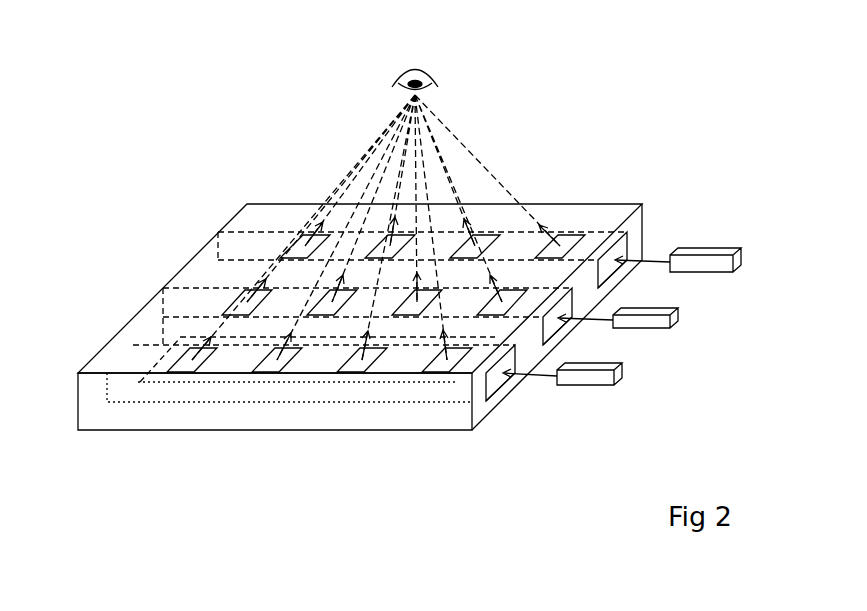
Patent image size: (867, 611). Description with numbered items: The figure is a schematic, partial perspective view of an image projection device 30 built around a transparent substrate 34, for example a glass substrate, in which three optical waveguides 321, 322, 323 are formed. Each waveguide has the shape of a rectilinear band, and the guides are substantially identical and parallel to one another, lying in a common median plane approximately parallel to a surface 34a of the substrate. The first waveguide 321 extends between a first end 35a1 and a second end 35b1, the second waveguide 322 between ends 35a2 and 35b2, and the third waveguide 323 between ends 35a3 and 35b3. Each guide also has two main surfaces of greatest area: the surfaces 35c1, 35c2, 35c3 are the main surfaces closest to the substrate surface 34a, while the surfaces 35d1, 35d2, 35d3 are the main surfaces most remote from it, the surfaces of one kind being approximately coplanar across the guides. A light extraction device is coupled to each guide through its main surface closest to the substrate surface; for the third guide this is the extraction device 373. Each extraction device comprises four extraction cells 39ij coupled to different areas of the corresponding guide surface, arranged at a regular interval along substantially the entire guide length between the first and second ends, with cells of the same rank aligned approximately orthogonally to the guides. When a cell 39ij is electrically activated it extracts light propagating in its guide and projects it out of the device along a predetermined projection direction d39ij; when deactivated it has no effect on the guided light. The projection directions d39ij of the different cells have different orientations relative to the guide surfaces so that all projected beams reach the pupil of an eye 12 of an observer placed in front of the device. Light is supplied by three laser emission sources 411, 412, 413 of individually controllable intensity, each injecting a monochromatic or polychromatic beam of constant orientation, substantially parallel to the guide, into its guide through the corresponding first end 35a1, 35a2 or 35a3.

The eye 12 is at (437, 85).
The image projection device 30 is at (128, 190).
The first optical waveguide 321 is at (597, 233).
The second optical waveguide 322 is at (473, 363).
The third optical waveguide 323 is at (418, 392).
The transparent substrate 34 is at (483, 422).
The substrate surface 34a is at (605, 210).
The first end of first waveguide 35a1 is at (623, 250).
The first end of second waveguide 35a2 is at (575, 292).
The first end of third waveguide 35a3 is at (518, 350).
The second end of first waveguide 35b1 is at (242, 258).
The second end of second waveguide 35b2 is at (182, 312).
The second end of third waveguide 35b3 is at (118, 364).
The main surface of first waveguide 35c1 is at (250, 237).
The main surface of second waveguide 35c2 is at (188, 292).
The main surface of third waveguide 35c3 is at (133, 347).
The main surface of first waveguide 35d1 is at (598, 290).
The main surface of second waveguide 35d2 is at (548, 348).
The main surface of third waveguide 35d3 is at (490, 402).
The light extraction device 373 is at (158, 384).
The extraction cells 39ij is at (452, 378).
The projection direction d39ij is at (488, 172).
The first laser emission source 411 is at (741, 258).
The second laser emission source 412 is at (679, 318).
The third laser emission source 413 is at (623, 374).